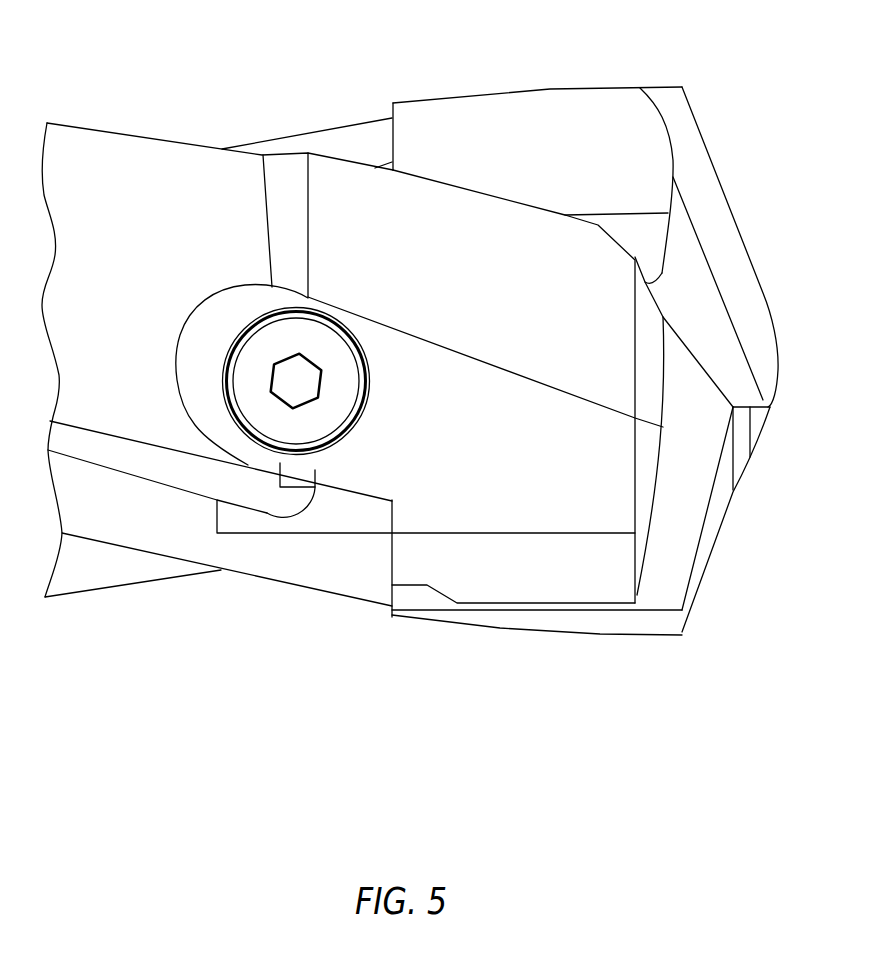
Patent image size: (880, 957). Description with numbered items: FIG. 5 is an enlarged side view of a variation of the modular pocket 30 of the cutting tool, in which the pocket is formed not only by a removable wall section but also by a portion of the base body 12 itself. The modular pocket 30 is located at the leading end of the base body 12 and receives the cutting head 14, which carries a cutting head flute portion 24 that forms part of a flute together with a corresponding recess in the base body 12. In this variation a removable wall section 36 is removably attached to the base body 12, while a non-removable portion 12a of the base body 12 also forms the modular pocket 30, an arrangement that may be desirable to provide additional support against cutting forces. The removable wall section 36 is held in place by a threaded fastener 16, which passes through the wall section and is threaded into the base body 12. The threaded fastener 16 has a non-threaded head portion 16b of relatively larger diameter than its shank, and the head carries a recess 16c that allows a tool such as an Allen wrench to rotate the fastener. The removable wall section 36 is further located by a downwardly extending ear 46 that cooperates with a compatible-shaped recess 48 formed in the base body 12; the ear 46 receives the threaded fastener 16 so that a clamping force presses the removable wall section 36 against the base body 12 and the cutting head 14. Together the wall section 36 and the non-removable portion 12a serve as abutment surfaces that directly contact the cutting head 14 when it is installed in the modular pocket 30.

The base body 12 is at (144, 163).
The non-removable portion 12a is at (362, 212).
The cutting head flute portion 24 is at (517, 128).
The cutting head 14 is at (708, 140).
The modular pocket 30 is at (667, 305).
The downwardly extending ear 46 is at (210, 328).
The recess 48 is at (177, 387).
The threaded fastener 16 is at (277, 417).
The non-threaded head portion 16b is at (252, 396).
The recess 16c is at (300, 385).
The removable wall section 36 is at (435, 498).